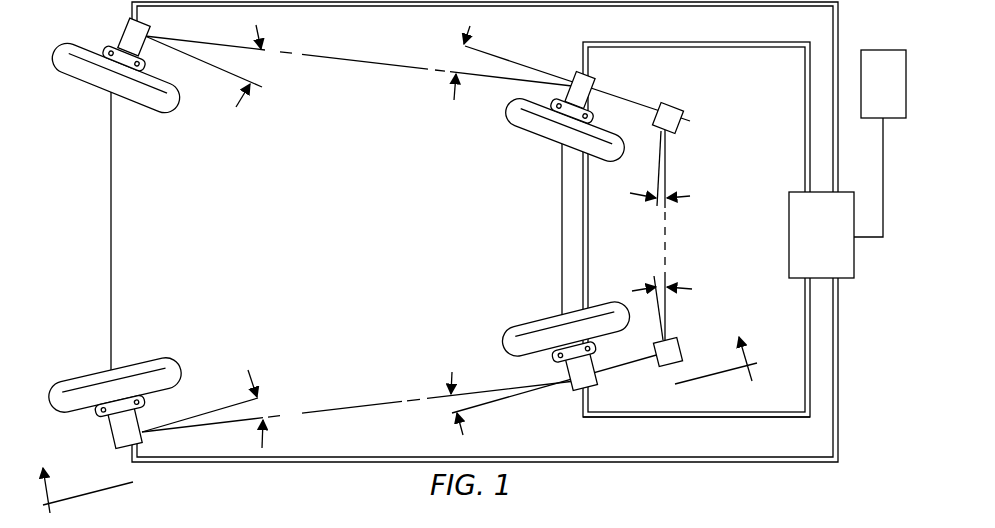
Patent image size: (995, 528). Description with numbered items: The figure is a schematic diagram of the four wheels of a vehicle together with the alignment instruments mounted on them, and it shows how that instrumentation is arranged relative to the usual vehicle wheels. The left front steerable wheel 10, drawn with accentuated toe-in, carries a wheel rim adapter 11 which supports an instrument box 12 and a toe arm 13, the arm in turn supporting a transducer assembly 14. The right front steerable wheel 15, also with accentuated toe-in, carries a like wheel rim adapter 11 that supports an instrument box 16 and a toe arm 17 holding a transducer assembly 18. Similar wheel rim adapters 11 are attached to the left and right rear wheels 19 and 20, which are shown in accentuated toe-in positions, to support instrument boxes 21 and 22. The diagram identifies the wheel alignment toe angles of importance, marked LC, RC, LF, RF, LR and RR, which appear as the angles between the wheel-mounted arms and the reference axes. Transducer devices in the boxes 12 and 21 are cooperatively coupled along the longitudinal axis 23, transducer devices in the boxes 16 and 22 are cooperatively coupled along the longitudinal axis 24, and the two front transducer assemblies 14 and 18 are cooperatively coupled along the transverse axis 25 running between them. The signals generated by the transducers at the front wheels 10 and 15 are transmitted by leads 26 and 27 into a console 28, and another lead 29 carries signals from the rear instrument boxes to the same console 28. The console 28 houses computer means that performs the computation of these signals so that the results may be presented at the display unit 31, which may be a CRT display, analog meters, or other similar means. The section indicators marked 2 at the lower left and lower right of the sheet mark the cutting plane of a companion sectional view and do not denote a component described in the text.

The left front steerable wheel 10 is at (536, 125).
The wheel rim adapter 11 is at (118, 55).
The instrument box 12 is at (577, 78).
The toe arm 13 is at (617, 100).
The transducer assembly 14 is at (690, 121).
The right front steerable wheel 15 is at (532, 338).
The instrument box 16 is at (577, 390).
The toe arm 17 is at (626, 369).
The transducer assembly 18 is at (680, 368).
The left rear wheel 19 is at (180, 100).
The right rear wheel 20 is at (162, 372).
The instrument box 21 is at (128, 30).
The instrument box 22 is at (143, 438).
The longitudinal axis 23 is at (373, 63).
The longitudinal axis 24 is at (372, 406).
The transverse axis 25 is at (668, 222).
The lead 26 is at (725, 48).
The lead 27 is at (678, 418).
The console 28 is at (829, 249).
The lead 29 is at (440, 3).
The display unit 31 is at (891, 95).
The section line 2- 2 is at (398, 432).
The left rear toe angle LR is at (266, 77).
The left front toe angle LF is at (467, 72).
The right rear toe angle RR is at (264, 410).
The right front toe angle RF is at (452, 404).
The left cross toe angle LC is at (658, 205).
The right cross toe angle RC is at (658, 280).